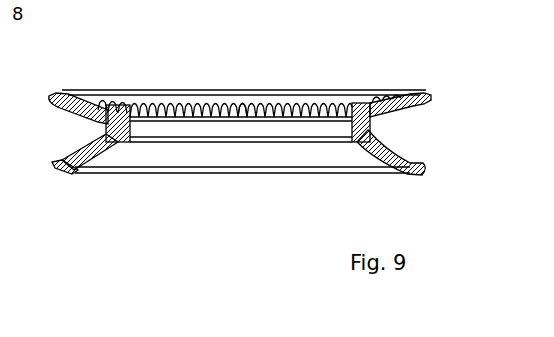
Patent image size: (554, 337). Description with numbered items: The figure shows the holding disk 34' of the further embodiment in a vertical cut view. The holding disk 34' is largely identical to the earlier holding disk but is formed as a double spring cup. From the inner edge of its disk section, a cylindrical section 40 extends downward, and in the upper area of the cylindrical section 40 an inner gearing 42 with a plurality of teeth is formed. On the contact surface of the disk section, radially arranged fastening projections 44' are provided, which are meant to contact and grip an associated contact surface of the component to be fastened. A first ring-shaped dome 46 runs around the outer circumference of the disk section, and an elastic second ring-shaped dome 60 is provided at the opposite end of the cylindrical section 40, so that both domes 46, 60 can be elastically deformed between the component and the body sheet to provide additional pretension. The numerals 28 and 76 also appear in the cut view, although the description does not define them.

The top plate 28 is at (297, 93).
The holding disk 34' is at (236, 114).
The cylindrical section 40 is at (372, 127).
The inner gearing 42 is at (220, 110).
The fastening projections 44' is at (258, 76).
The first ring-shaped dome 46 is at (56, 96).
The second ring-shaped dome 60 is at (58, 167).
The hub wall 76 is at (103, 100).